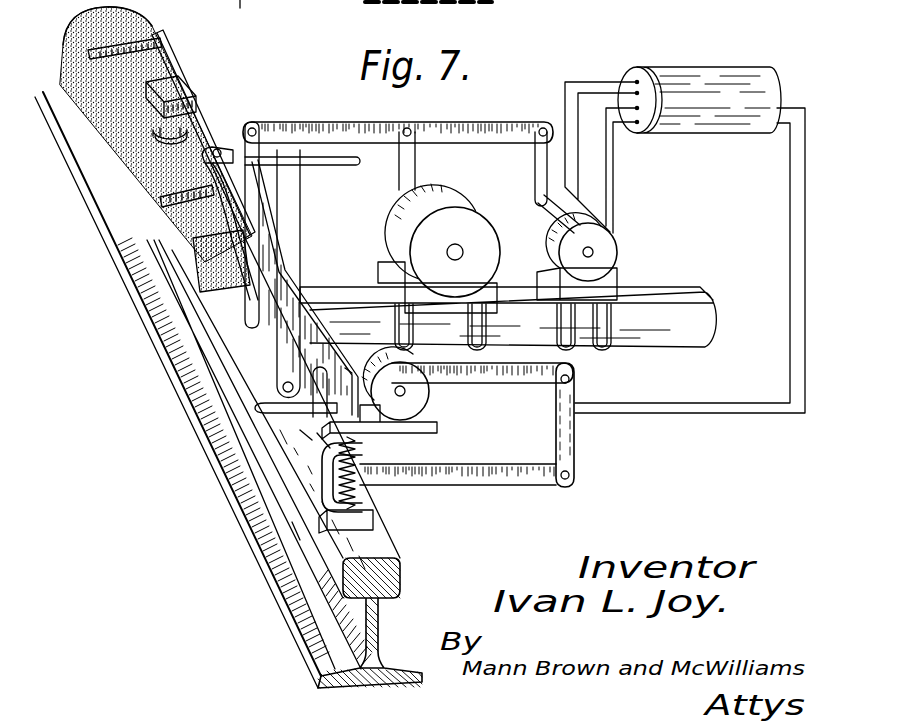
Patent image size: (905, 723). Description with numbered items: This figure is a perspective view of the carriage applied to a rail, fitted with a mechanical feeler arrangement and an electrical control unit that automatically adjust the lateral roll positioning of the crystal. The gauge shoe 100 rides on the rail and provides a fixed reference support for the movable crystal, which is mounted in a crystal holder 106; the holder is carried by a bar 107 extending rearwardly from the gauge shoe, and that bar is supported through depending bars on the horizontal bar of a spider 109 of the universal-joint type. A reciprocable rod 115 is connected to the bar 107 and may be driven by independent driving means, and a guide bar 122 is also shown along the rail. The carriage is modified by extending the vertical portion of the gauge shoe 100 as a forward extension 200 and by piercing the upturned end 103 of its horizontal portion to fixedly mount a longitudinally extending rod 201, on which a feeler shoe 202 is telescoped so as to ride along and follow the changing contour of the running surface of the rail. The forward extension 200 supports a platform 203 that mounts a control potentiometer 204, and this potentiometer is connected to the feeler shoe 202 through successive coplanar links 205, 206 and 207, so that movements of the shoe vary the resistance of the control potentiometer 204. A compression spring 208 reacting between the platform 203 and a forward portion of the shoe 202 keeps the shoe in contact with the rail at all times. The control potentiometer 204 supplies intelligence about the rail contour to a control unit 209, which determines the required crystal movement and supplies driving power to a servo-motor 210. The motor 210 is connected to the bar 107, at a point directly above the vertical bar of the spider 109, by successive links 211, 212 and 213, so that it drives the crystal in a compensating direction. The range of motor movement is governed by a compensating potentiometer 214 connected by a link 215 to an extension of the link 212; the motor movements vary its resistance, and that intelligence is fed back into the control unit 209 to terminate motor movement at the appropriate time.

The gauge shoe 100 is at (244, 378).
The upturned end 103 is at (300, 430).
The crystal holder 106 is at (164, 128).
The bar 107 is at (190, 150).
The spider 109 is at (262, 336).
The reciprocable rod 115 is at (285, 170).
The guide bar 122 is at (170, 56).
The forward extension 200 is at (345, 368).
The longitudinally extending rod 201 is at (317, 433).
The feeler shoe 202 is at (292, 522).
The platform 203 is at (356, 434).
The control potentiometer 204 is at (408, 412).
The link 205 is at (466, 378).
The link 206 is at (575, 458).
The link 207 is at (492, 481).
The compression spring 208 is at (358, 498).
The control unit 209 is at (702, 75).
The servo-motor 210 is at (393, 218).
The link 211 is at (411, 161).
The link 212 is at (287, 122).
The link 213 is at (253, 217).
The compensating potentiometer 214 is at (603, 253).
The link 215 is at (537, 181).